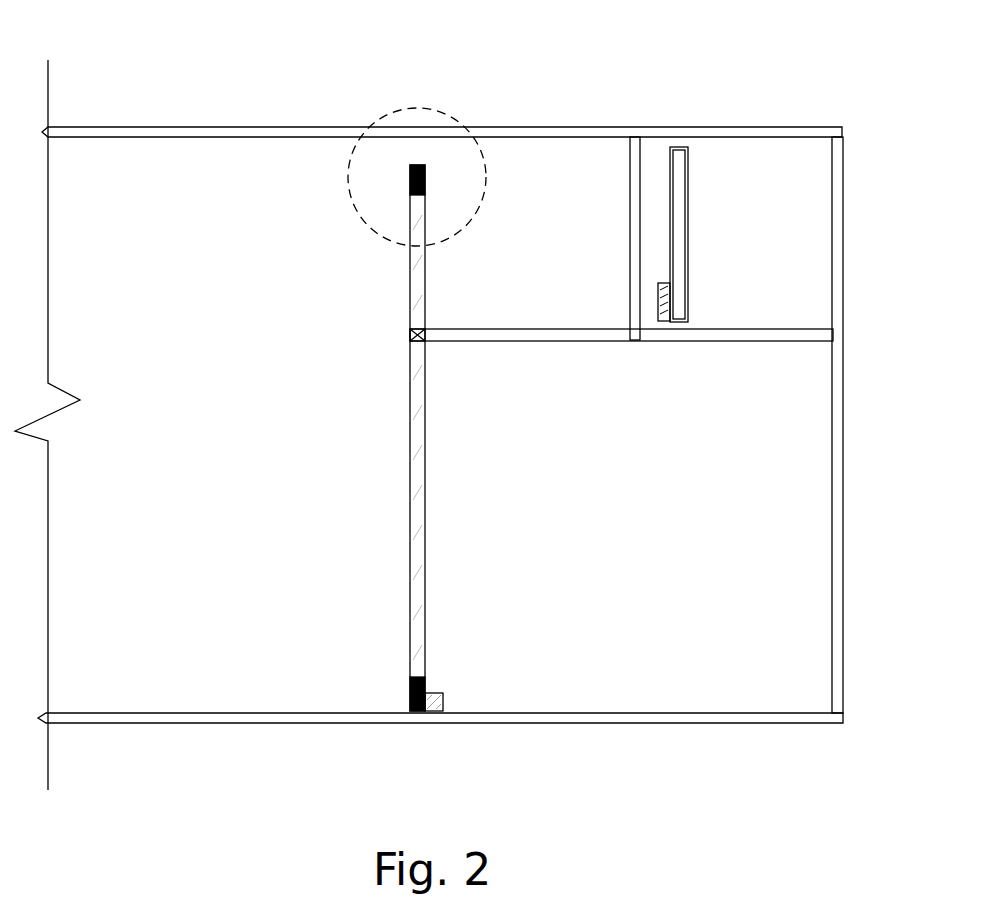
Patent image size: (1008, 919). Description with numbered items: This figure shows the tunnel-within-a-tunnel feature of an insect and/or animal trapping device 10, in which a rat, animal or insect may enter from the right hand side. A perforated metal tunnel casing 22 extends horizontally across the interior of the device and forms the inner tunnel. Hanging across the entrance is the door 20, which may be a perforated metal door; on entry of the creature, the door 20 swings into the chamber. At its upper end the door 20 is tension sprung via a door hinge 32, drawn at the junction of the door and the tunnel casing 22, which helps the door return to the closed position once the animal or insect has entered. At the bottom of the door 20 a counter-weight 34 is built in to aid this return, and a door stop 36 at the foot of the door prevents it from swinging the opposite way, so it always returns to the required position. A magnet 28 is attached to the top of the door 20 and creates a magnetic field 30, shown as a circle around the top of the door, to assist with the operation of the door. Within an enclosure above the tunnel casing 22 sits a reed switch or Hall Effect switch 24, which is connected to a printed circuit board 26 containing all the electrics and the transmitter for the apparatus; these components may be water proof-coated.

The base structure / floor plate 10 is at (292, 726).
The door 20 is at (426, 598).
The perforated metal tunnel casing 22 is at (527, 341).
The reed switch or Hall Effect switch 24 is at (664, 305).
The printed circuit board 26 is at (678, 187).
The magnet 28 is at (424, 175).
The magnetic field 30 is at (420, 108).
The door hinge 32 is at (427, 328).
The counter-weight 34 is at (408, 695).
The door stop 36 is at (436, 714).